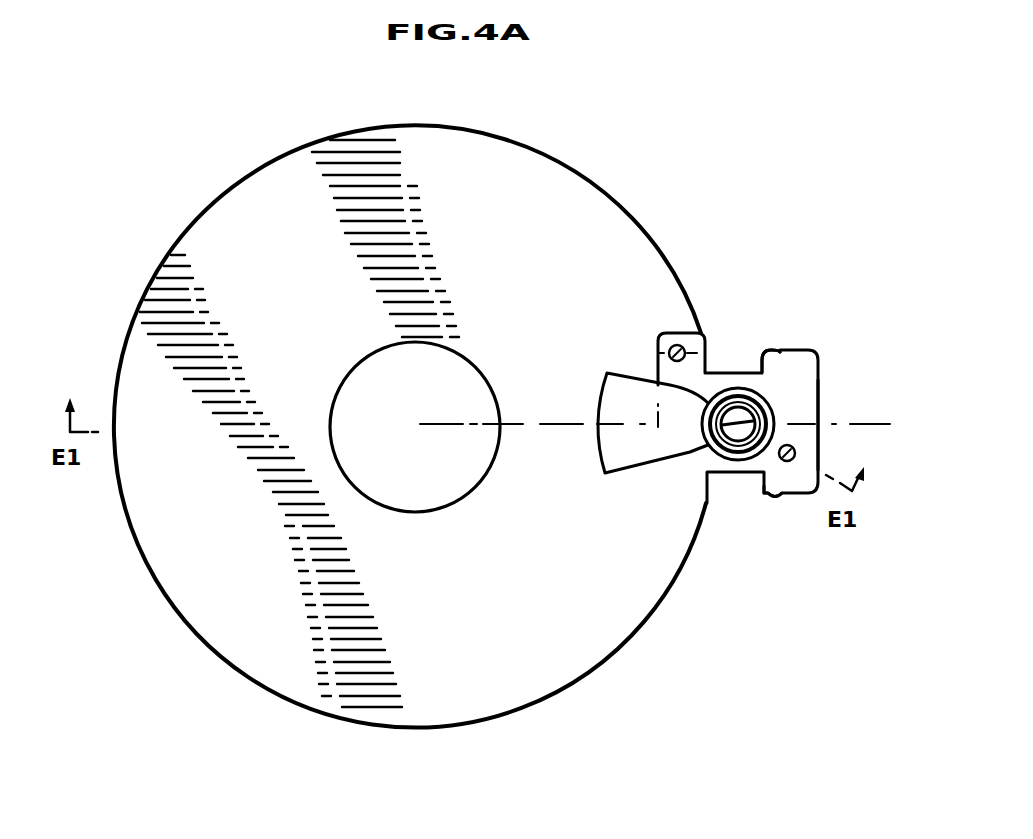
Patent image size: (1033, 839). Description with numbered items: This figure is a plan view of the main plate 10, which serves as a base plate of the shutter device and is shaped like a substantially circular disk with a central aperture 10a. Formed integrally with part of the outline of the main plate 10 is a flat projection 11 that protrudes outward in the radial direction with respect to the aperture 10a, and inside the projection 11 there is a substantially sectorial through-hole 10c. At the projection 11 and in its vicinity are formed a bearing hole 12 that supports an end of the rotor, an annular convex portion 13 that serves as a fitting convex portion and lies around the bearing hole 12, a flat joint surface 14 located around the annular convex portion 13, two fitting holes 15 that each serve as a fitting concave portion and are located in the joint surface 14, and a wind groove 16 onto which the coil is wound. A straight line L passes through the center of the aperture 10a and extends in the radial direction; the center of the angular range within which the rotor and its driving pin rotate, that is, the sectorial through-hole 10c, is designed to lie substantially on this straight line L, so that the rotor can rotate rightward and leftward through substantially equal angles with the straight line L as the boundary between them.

The main plate 10 is at (633, 213).
The aperture 10a is at (338, 393).
The sectorial through-hole 10c is at (645, 461).
The projection 11 is at (804, 350).
The bearing hole 12 is at (736, 434).
The annular convex portion 13 is at (768, 398).
The joint surface 14 is at (800, 396).
The fitting holes 15 is at (680, 346).
The wind groove 16 is at (764, 372).
The straight line L is at (531, 424).